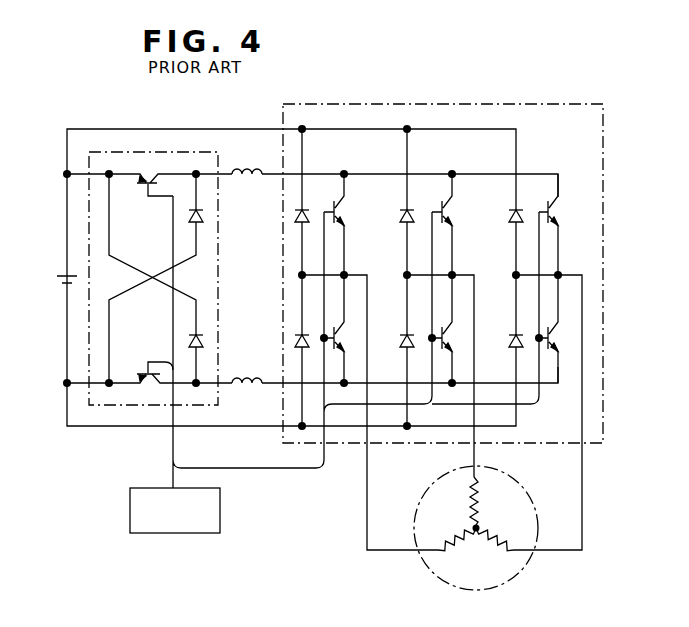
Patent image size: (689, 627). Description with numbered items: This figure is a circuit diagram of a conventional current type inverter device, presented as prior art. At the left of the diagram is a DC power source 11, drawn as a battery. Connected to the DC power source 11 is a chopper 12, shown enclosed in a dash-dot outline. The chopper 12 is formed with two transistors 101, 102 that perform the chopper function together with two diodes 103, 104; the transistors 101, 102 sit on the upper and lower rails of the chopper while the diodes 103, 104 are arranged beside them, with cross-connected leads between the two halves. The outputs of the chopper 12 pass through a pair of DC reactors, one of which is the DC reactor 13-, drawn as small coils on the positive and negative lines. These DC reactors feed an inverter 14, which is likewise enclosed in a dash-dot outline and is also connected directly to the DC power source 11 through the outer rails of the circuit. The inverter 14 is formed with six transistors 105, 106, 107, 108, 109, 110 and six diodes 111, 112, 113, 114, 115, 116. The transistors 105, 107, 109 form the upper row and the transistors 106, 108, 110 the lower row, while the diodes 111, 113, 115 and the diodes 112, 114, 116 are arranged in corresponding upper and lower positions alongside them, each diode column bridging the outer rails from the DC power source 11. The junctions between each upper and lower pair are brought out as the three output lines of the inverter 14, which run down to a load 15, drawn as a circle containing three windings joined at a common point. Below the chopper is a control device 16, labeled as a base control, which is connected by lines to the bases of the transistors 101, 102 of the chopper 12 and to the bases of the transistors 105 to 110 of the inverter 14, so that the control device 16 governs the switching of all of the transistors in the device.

The DC power source 11 is at (58, 279).
The chopper 12 is at (158, 152).
The DC reactor 13- is at (261, 388).
The inverter 14 is at (435, 104).
The load 15 is at (503, 583).
The control device 16 is at (196, 534).
The transistor 101 is at (145, 192).
The transistor 102 is at (145, 366).
The diode 103 is at (206, 214).
The diode 104 is at (207, 343).
The transistor 105 is at (343, 206).
The transistor 106 is at (343, 332).
The transistor 107 is at (450, 206).
The transistor 108 is at (451, 332).
The transistor 109 is at (556, 210).
The transistor 110 is at (556, 336).
The diode 111 is at (296, 214).
The diode 112 is at (296, 341).
The diode 113 is at (401, 214).
The diode 114 is at (400, 337).
The diode 115 is at (510, 216).
The diode 116 is at (508, 337).